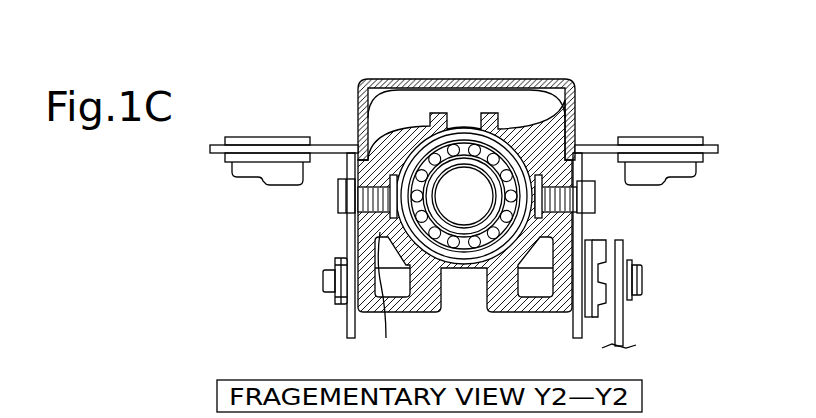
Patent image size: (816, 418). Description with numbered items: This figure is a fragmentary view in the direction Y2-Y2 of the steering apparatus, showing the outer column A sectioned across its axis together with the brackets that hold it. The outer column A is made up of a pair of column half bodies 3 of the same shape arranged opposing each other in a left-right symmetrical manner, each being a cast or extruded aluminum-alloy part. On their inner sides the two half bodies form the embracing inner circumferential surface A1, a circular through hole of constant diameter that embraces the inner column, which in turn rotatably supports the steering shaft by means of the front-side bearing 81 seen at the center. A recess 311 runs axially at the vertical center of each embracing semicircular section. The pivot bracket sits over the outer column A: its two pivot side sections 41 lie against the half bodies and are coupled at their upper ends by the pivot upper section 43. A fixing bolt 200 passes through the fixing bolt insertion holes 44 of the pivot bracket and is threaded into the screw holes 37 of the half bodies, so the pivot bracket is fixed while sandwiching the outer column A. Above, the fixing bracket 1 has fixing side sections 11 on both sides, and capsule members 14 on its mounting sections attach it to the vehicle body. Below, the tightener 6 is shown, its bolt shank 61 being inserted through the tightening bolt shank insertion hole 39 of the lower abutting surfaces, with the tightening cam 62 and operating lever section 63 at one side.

The fixing bracket 1 is at (592, 140).
The column half body 3 is at (380, 150).
The tightener 6 is at (644, 278).
The fixing side section 11 is at (350, 313).
The capsule member 14 is at (242, 142).
The screw hole 37 is at (340, 244).
The tightening bolt shank insertion hole 39 is at (333, 6).
The pivot side section 41 is at (357, 104).
The pivot upper section 43 is at (442, 79).
The fixing bolt insertion hole 44 is at (352, 197).
The bolt shank 61 is at (462, 282).
The tightening cam 62 is at (598, 240).
The operating lever section 63 is at (627, 320).
The front-side bearing 81 is at (476, 133).
The fixing bolt 200 is at (339, 222).
The recess 311 is at (392, 295).
The outer column A is at (520, 122).
The embracing inner circumferential surface A1 is at (416, 136).